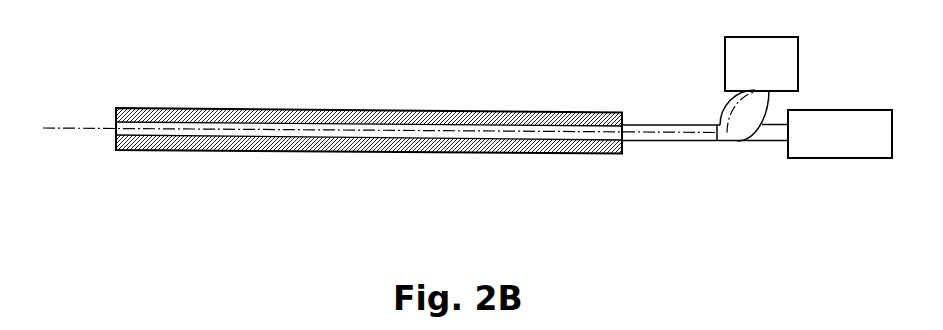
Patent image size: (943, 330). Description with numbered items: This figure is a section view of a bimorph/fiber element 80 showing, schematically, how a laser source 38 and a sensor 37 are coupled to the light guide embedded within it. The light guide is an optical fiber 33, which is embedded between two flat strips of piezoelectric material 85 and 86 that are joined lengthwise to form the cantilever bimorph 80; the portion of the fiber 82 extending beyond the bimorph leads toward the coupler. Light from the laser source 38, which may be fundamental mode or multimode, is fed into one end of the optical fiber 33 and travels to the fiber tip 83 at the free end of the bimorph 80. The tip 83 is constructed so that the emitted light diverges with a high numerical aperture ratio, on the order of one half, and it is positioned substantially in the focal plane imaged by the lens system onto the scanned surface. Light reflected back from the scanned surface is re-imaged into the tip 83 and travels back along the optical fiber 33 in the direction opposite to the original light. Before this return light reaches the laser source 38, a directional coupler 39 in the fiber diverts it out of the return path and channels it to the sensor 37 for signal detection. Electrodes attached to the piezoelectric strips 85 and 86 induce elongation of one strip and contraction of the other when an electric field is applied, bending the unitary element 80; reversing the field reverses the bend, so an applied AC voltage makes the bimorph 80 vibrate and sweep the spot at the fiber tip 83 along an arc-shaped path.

The bimorph/fiber element 80 is at (380, 116).
The inner tube 82 is at (624, 124).
The fiber tip 83 is at (116, 128).
The piezoelectric material 85 is at (557, 111).
The piezoelectric material 86 is at (363, 152).
The optical fiber 33 is at (652, 141).
The sensor 37 is at (748, 76).
The laser source 38 is at (825, 145).
The directional coupler 39 is at (713, 161).